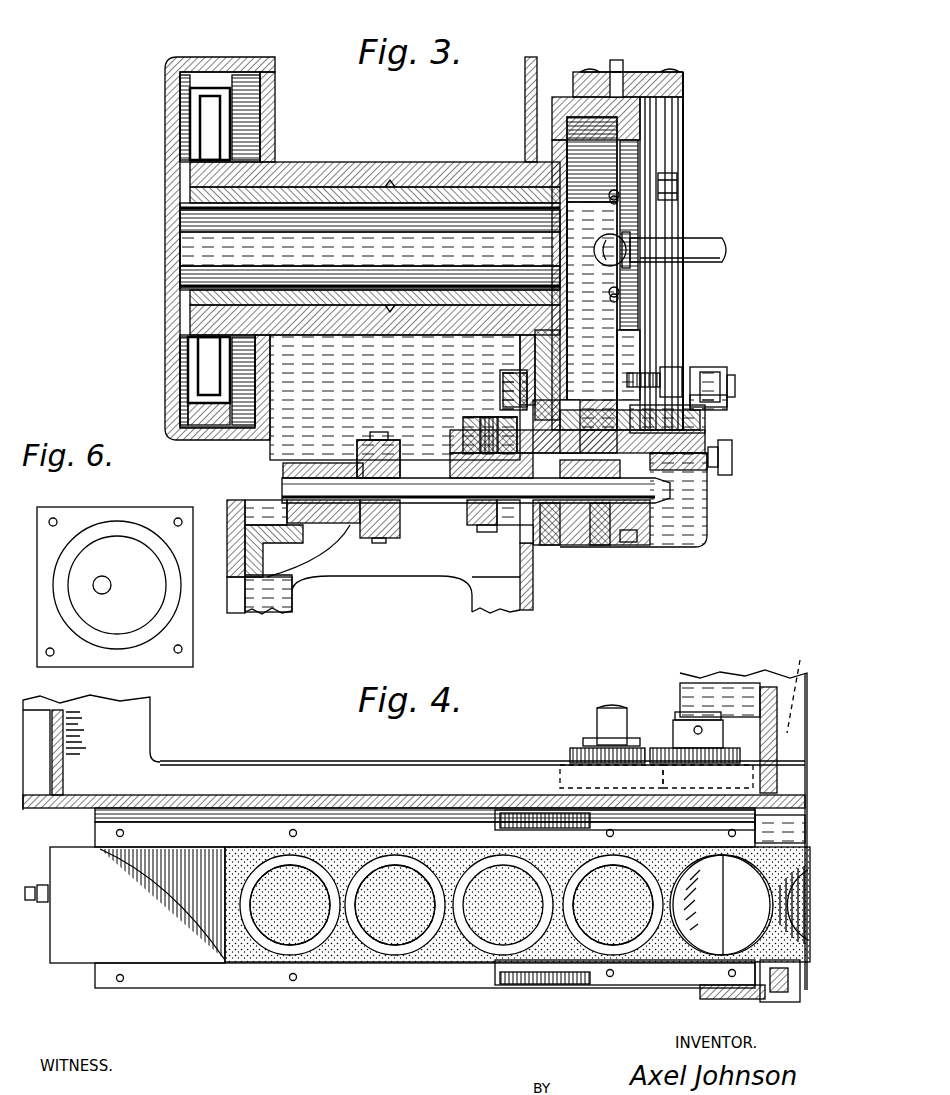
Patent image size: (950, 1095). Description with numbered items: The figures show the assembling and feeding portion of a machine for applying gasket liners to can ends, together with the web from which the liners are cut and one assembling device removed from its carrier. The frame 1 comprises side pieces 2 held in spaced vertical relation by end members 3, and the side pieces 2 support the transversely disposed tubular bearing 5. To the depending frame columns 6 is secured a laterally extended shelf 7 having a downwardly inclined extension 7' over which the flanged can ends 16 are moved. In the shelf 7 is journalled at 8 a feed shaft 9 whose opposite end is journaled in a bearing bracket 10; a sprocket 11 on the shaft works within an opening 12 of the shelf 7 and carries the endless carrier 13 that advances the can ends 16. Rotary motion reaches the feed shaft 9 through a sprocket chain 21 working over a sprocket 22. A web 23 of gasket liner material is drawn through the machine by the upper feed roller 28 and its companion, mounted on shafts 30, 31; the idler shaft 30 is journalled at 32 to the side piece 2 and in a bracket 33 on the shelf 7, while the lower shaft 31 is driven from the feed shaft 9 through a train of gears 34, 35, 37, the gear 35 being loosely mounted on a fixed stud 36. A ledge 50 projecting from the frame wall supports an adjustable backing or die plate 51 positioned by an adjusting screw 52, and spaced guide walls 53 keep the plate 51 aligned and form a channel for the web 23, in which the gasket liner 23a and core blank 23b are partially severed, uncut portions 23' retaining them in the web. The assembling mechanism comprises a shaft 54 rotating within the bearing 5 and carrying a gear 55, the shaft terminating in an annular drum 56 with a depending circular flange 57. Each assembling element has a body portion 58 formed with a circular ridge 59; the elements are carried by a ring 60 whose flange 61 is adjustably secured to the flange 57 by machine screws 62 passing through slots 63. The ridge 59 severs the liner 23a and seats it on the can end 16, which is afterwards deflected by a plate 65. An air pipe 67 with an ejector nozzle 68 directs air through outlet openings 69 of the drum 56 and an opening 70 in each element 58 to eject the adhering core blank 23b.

In FIG. 4, the frame 1 is at (243, 800).
In FIG. 3, the side pieces 2 is at (270, 116).
In FIG. 3, the end members 3 is at (345, 338).
In FIG. 3, the tubular bearing 5 is at (452, 170).
In FIG. 3, the frame columns 6 is at (236, 590).
In FIG. 4, the frame columns 6 is at (91, 752).
In FIG. 3, the shelf or support 7 is at (585, 547).
In FIG. 3, the inclined extension of the shelf 7' is at (616, 441).
In FIG. 4, the inclined extension of the shelf 7' is at (550, 893).
In FIG. 3, the journal 8 is at (517, 516).
In FIG. 3, the feed shaft 9 is at (437, 502).
In FIG. 4, the feed shaft 9 is at (597, 718).
In FIG. 3, the bearing bracket 10 is at (325, 465).
In FIG. 3, the sprocket 11 is at (640, 522).
In FIG. 3, the opening of the shelf 12 is at (705, 478).
In FIG. 3, the endless carrier 13 is at (680, 478).
In FIG. 3, the flanged can ends 16 is at (606, 530).
In FIG. 4, the flanged can ends 16 is at (698, 905).
In FIG. 3, the sprocket chain 21 is at (372, 440).
In FIG. 3, the sprocket 22 is at (388, 450).
In FIG. 3, the web of gasket liner material 23 is at (575, 426).
In FIG. 4, the web of gasket liner material 23 is at (517, 868).
In FIG. 4, the uncut portions of the web 23' is at (269, 953).
In FIG. 4, the gasket liner 23a is at (313, 965).
In FIG. 3, the core blank 23b is at (612, 510).
In FIG. 4, the core blank 23b is at (397, 942).
In FIG. 4, the upper feed roller 28 is at (794, 905).
In FIG. 3, the idler shaft 30 is at (732, 387).
In FIG. 4, the idler shaft 30 is at (782, 1000).
In FIG. 3, the lower feed roller shaft 31 is at (735, 465).
In FIG. 4, the lower feed roller shaft 31 is at (797, 689).
In FIG. 3, the journal 32 is at (500, 385).
In FIG. 4, the journal 32 is at (805, 812).
In FIG. 3, the bracket 33 is at (715, 372).
In FIG. 4, the bracket 33 is at (740, 998).
In FIG. 3, the gear 34 is at (465, 440).
In FIG. 4, the gear 34 is at (745, 720).
In FIG. 3, the gear 35 is at (470, 425).
In FIG. 4, the gear 35 is at (690, 742).
In FIG. 3, the fixed stud 36 is at (450, 464).
In FIG. 4, the fixed stud 36 is at (702, 714).
In FIG. 3, the gear 37 is at (480, 532).
In FIG. 4, the gear 37 is at (568, 752).
In FIG. 4, the ledge or supporting shelf 50 is at (162, 815).
In FIG. 4, the backing or die plate 51 is at (137, 905).
In FIG. 4, the adjusting screw 52 is at (32, 904).
In FIG. 4, the guide walls 53 is at (260, 830).
In FIG. 3, the shaft 54 is at (370, 302).
In FIG. 3, the gear 55 is at (197, 105).
In FIG. 3, the annular drum 56 is at (576, 118).
In FIG. 3, the circular flange 57 is at (660, 120).
In FIG. 3, the body portion of assembling element 58 is at (650, 74).
In FIG. 6, the body portion of assembling element 58 is at (90, 520).
In FIG. 3, the circular ridge 59 is at (592, 70).
In FIG. 6, the circular ridge 59 is at (100, 638).
In FIG. 3, the ring 60 is at (690, 83).
In FIG. 3, the flange of the ring 61 is at (665, 128).
In FIG. 3, the machine screws 62 is at (680, 186).
In FIG. 3, the slots 63 is at (655, 360).
In FIG. 4, the deflecting plate 65 is at (748, 905).
In FIG. 3, the air pipe 67 is at (700, 252).
In FIG. 3, the ejector nozzle 68 is at (606, 246).
In FIG. 3, the outlet openings 69 is at (612, 195).
In FIG. 3, the opening in assembling element 70 is at (620, 70).
In FIG. 6, the opening in assembling element 70 is at (110, 591).